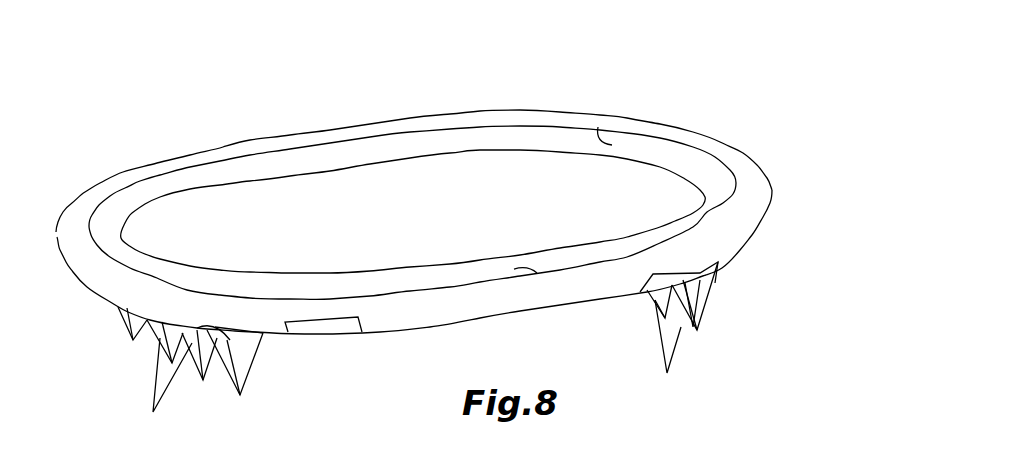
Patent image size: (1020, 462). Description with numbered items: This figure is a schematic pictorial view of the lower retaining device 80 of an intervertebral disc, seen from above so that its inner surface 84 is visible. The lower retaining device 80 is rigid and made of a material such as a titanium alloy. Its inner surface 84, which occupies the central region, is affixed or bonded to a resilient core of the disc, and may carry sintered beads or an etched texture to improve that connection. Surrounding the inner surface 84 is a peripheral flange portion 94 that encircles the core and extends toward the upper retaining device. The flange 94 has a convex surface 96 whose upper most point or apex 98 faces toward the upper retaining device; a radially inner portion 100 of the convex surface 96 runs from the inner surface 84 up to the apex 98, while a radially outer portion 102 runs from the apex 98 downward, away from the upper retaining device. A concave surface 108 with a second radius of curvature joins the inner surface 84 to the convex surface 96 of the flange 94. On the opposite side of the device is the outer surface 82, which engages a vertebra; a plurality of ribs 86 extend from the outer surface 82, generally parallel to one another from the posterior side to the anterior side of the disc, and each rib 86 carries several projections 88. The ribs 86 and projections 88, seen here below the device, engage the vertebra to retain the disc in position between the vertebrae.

The lower retaining device 80 is at (767, 123).
The outer surface 82 is at (393, 330).
The inner surface 84 is at (465, 190).
The ribs 86 is at (247, 363).
The projections 88 is at (223, 357).
The peripheral flange portion 94 is at (157, 168).
The convex surface 96 is at (683, 135).
The apex 98 is at (537, 273).
The radially inner portion 100 is at (348, 135).
The radially outer portion 102 is at (748, 210).
The concave surface 108 is at (598, 127).